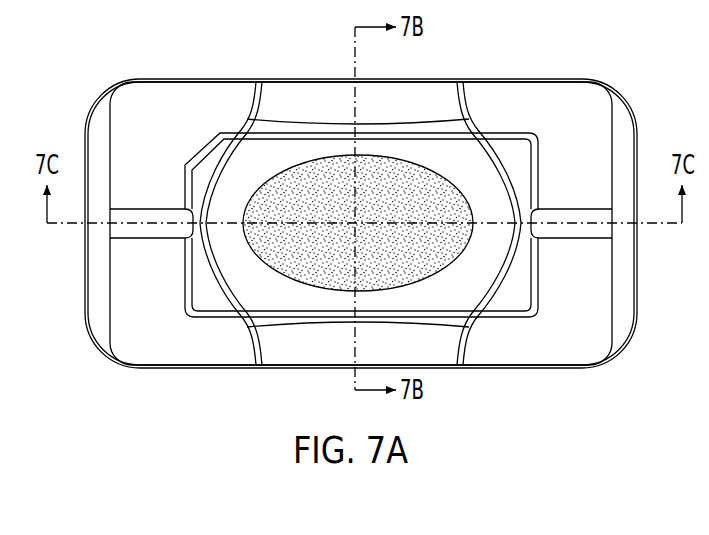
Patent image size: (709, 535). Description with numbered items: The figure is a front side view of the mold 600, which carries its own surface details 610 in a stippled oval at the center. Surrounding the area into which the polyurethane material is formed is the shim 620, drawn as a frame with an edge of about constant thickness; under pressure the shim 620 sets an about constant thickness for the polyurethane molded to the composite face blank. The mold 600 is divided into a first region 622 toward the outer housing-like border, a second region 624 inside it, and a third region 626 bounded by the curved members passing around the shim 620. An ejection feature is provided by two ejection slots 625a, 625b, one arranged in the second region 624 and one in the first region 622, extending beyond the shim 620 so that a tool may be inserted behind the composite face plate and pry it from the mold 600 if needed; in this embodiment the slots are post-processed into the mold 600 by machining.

The mold 600 is at (512, 63).
The surface details 610 is at (419, 147).
The shim 620 is at (526, 131).
The first region 622 is at (588, 106).
The second region 624 is at (209, 103).
The ejection slot 625a is at (137, 218).
The ejection slot 625b is at (568, 218).
The third region 626 is at (395, 101).